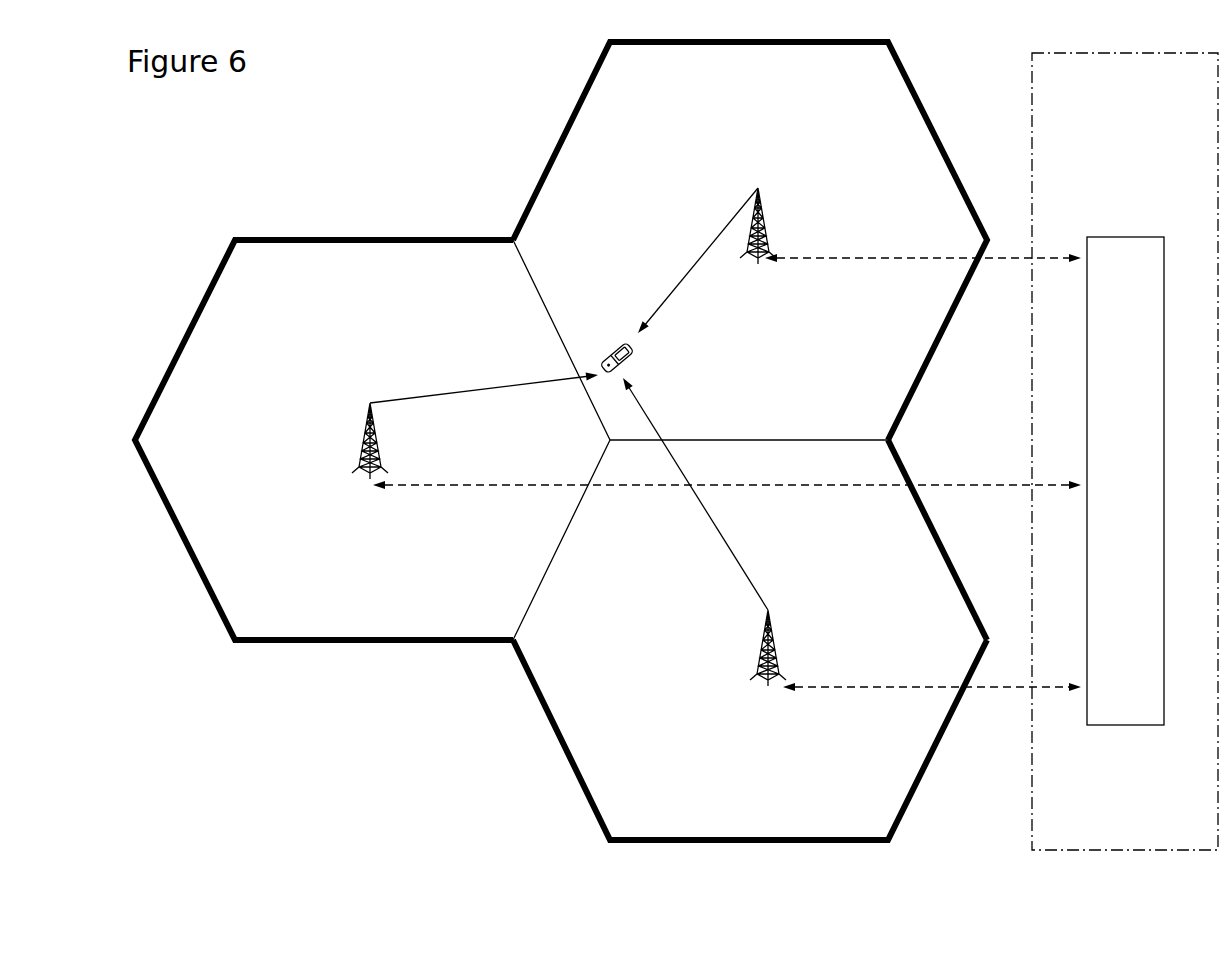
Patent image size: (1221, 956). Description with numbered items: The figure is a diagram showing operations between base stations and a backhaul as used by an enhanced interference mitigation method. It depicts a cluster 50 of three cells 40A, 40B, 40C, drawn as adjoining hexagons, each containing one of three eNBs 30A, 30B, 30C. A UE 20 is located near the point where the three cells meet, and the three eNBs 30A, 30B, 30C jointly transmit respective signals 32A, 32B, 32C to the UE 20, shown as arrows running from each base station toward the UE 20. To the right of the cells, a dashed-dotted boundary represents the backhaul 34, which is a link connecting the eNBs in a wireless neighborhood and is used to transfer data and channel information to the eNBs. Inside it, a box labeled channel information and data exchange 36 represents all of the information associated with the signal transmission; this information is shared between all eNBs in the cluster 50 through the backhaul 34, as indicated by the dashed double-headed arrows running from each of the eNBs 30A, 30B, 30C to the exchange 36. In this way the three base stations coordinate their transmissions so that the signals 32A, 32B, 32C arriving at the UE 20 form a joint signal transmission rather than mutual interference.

The UE 20 is at (616, 340).
The eNB 30A is at (370, 490).
The eNB 30B is at (768, 276).
The eNB 30C is at (774, 691).
The signal 32A is at (484, 382).
The signal 32B is at (698, 260).
The signal 32C is at (695, 494).
The backhaul 34 is at (1125, 451).
The channel information and data exchange 36 is at (1125, 481).
The cell 40A is at (372, 440).
The cell 40B is at (750, 241).
The cell 40C is at (750, 640).
The cluster 50 is at (488, 190).